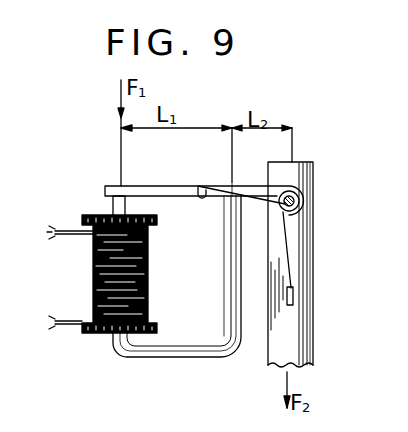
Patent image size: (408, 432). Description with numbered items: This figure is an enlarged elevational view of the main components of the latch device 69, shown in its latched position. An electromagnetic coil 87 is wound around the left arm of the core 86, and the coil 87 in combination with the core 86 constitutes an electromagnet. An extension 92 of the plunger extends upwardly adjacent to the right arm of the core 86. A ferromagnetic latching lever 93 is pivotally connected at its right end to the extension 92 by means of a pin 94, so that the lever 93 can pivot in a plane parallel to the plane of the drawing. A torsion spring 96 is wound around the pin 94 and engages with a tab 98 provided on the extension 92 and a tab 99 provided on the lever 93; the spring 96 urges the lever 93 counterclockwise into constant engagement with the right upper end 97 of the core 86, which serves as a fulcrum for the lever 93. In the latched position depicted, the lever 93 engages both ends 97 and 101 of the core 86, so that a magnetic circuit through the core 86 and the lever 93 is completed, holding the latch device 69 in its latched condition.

The latch device 69 is at (232, 113).
The core 86 is at (188, 355).
The electromagnetic coil 87 is at (92, 265).
The extension 92 is at (298, 332).
The latching lever 93 is at (232, 190).
The pin 94 is at (311, 198).
The torsion spring 96 is at (287, 240).
The right upper end 97 is at (222, 205).
The tab 98 is at (295, 303).
The tab 99 is at (196, 186).
The end 101 is at (105, 197).